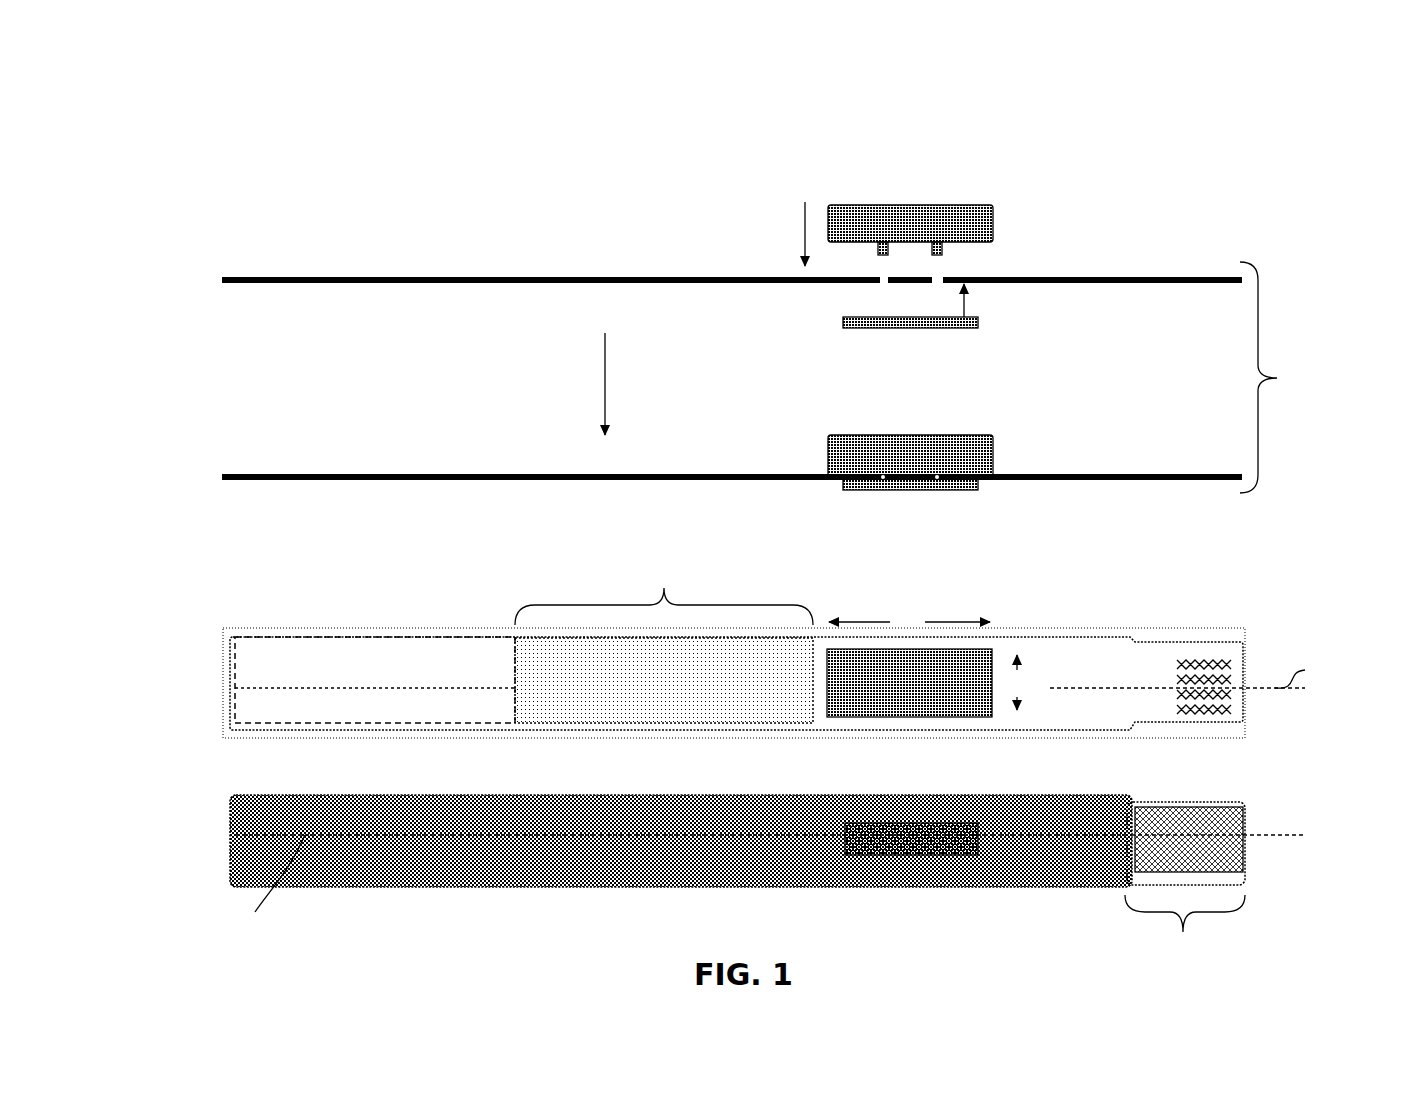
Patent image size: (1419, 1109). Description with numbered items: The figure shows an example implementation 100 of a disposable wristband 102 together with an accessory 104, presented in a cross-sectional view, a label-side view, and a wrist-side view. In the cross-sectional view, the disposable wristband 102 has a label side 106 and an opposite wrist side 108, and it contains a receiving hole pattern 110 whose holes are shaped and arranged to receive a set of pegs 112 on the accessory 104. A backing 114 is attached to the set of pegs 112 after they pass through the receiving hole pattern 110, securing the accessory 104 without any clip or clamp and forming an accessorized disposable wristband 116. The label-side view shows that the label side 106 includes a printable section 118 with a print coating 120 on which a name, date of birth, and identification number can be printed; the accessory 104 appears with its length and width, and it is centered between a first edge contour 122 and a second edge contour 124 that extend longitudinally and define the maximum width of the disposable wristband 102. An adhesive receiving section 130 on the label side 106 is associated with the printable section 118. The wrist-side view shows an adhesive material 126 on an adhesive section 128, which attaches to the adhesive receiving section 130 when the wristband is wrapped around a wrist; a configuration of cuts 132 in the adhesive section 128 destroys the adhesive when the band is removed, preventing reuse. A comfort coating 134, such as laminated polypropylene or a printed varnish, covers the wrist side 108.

The example implementation 100 is at (257, 93).
The disposable wristband 102 is at (295, 262).
The accessory 104 is at (845, 222).
The label side 106 is at (1082, 276).
The wrist side 108 is at (1145, 283).
The receiving hole pattern 110 is at (874, 289).
The set of pegs 112 is at (962, 256).
The backing 114 is at (947, 325).
The accessorized disposable wristband 116 is at (290, 450).
The printable section 118 is at (664, 593).
The print coating 120 is at (664, 680).
The first edge contour 122 is at (425, 631).
The second edge contour 124 is at (942, 734).
The adhesive material 126 is at (1225, 855).
The adhesive section 128 is at (1185, 888).
The adhesive receiving section 130 is at (375, 680).
The configuration of cuts 132 is at (1238, 820).
The comfort coating 134 is at (635, 858).